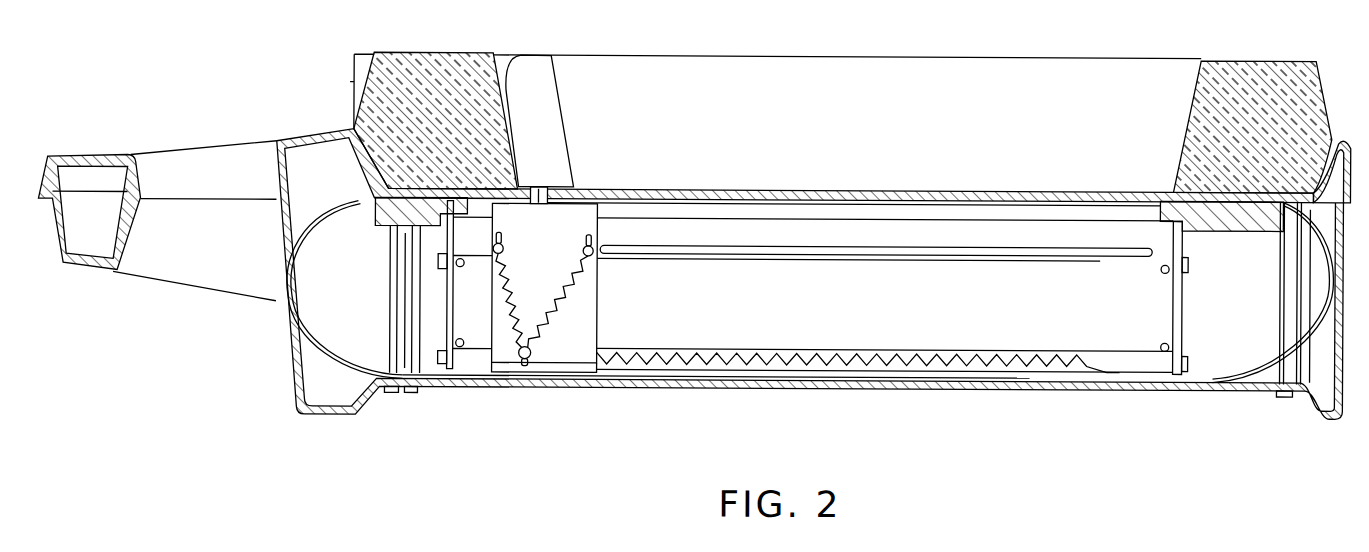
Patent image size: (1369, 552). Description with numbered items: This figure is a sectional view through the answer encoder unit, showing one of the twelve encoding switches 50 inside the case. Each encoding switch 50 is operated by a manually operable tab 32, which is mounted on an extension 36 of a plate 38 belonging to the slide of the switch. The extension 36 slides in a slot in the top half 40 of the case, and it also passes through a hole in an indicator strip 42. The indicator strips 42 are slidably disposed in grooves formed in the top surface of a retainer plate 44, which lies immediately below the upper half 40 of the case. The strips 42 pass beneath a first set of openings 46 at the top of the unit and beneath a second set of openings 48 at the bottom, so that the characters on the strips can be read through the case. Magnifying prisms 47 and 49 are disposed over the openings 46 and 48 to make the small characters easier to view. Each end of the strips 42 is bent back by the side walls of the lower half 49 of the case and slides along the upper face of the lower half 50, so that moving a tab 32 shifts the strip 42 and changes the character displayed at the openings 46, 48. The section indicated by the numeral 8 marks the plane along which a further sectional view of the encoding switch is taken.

The section line 8- 8 is at (527, 120).
The manually operable tabs 32 is at (552, 138).
The extensions 36 is at (547, 187).
The plates 38 is at (540, 255).
The top half of the case 40 is at (312, 141).
The indicator strips 42 is at (319, 334).
The retainer plate 44 is at (688, 214).
The first set of openings 46 is at (1240, 196).
The magnifying prism 47 is at (1205, 95).
The second set of openings 48 is at (450, 188).
The lower half of the case 49 is at (452, 68).
The encoding switch 50 is at (808, 309).